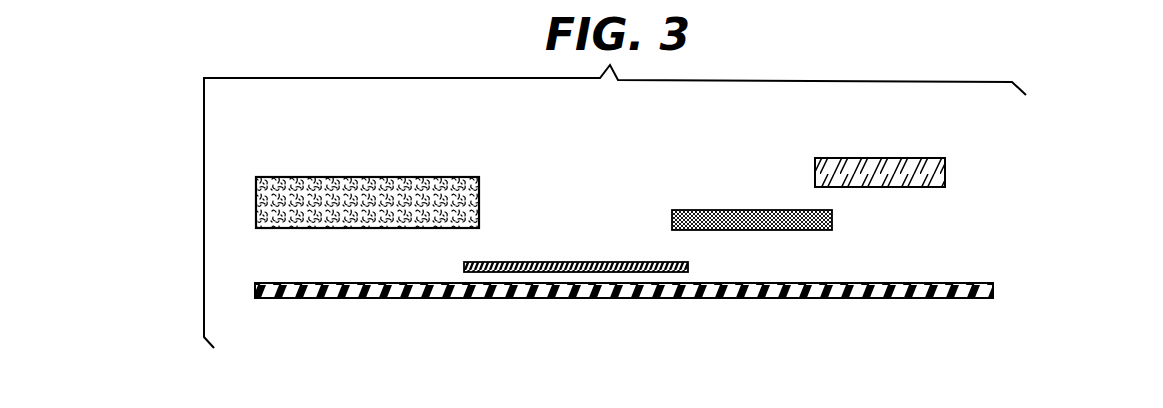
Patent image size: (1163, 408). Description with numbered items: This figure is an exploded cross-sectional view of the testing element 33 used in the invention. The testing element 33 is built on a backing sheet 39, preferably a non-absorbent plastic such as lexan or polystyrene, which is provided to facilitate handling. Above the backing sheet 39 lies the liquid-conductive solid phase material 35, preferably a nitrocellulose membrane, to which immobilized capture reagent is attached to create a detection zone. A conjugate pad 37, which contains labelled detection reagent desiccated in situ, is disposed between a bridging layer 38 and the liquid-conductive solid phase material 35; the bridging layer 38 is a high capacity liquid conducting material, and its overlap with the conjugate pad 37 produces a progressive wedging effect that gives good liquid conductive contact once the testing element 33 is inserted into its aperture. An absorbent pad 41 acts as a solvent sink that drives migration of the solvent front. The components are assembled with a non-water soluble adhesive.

The testing element 33 is at (1058, 135).
The liquid-conductive solid phase material 35 is at (580, 261).
The conjugate pad 37 is at (757, 210).
The bridging layer 38 is at (880, 165).
The backing sheet 39 is at (957, 285).
The absorbent pad 41 is at (355, 198).